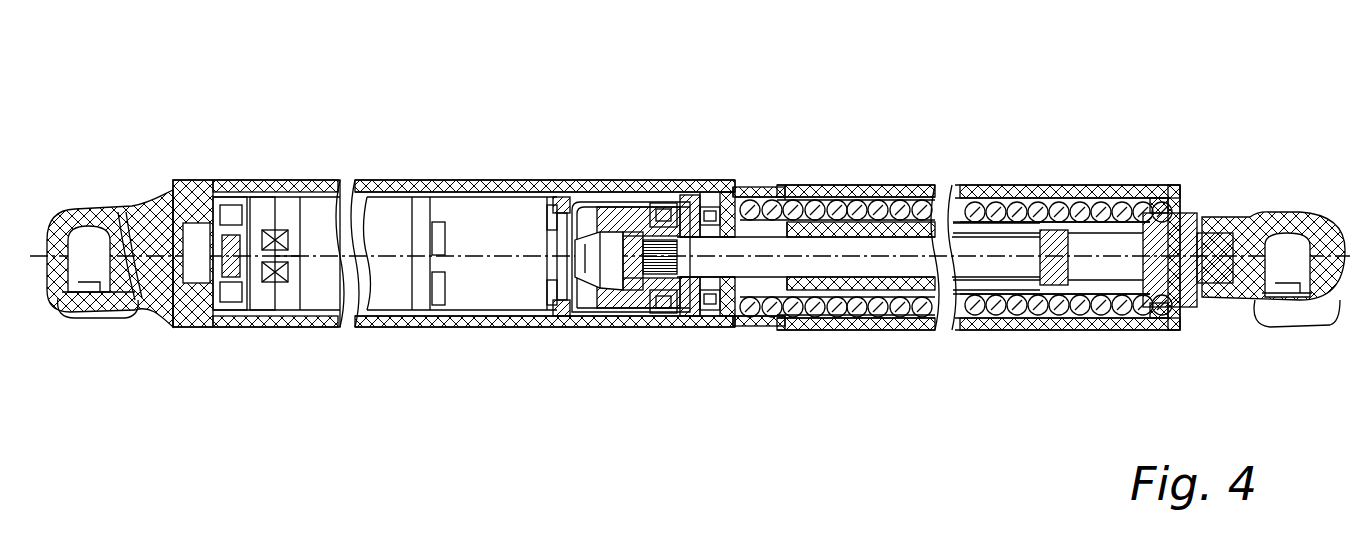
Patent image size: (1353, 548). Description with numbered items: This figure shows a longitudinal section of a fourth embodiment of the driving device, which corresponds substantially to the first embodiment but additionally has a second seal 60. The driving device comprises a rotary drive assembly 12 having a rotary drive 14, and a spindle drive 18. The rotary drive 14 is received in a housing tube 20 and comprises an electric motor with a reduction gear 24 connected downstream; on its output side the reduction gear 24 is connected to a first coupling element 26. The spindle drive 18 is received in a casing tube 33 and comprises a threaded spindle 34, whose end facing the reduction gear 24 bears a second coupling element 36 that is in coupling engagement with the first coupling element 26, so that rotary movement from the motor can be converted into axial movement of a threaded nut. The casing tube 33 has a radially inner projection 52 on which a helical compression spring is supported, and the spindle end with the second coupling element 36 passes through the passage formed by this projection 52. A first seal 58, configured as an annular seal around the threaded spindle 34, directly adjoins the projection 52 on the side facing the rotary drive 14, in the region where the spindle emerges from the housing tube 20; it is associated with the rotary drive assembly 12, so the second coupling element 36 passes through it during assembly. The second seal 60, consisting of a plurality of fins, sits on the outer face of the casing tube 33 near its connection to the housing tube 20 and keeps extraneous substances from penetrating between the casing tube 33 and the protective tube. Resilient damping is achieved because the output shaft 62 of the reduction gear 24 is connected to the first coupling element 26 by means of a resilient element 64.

The rotary drive assembly 12 is at (418, 108).
The rotary drive 14 is at (313, 179).
The spindle drive 18 is at (1003, 182).
The housing tube 20 is at (494, 178).
The reduction gear 24 is at (503, 300).
The first coupling element 26 is at (658, 257).
The casing tube 33 is at (812, 182).
The threaded spindle 34 is at (895, 182).
The second coupling element 36 is at (687, 185).
The radially inner projection 52 is at (742, 333).
The first seal 58 is at (709, 333).
The second seal 60 is at (738, 180).
The output shaft 62 is at (567, 332).
The resilient element 64 is at (600, 330).